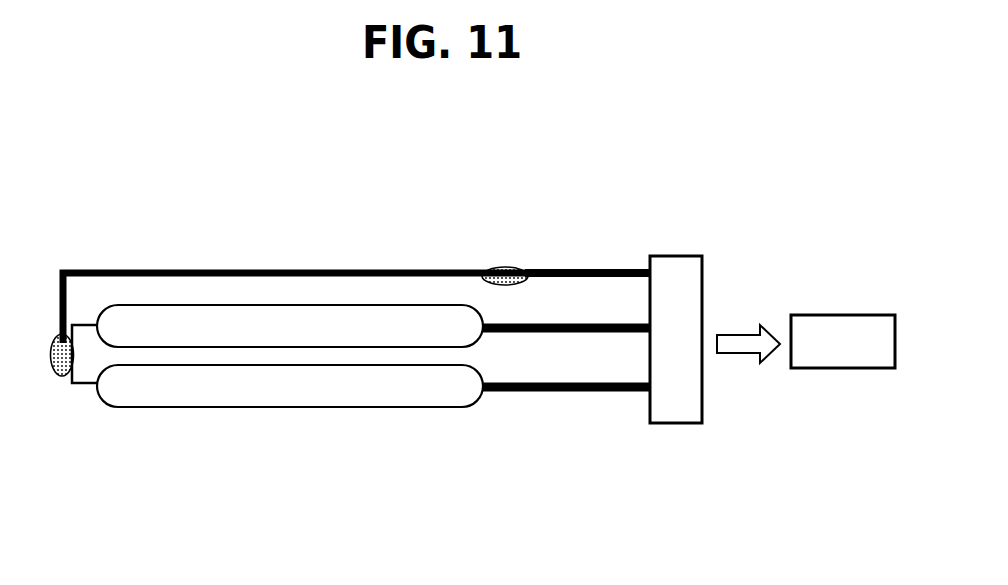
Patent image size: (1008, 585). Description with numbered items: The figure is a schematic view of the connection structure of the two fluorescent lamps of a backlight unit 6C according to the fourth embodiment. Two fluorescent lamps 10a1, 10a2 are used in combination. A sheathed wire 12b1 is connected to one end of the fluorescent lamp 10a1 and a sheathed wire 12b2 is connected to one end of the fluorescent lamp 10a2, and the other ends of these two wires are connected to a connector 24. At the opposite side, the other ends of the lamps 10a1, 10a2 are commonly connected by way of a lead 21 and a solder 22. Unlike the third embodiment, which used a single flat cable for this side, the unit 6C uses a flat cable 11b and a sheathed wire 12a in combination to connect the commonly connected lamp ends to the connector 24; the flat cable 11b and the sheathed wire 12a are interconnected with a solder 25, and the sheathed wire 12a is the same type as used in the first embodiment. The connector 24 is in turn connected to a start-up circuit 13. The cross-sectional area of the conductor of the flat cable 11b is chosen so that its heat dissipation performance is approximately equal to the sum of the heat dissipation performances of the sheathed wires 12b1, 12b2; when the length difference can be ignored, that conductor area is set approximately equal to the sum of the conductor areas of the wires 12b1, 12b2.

The backlight unit 6C is at (432, 160).
The flat cable 11b is at (407, 240).
The sheathed wire 12a is at (623, 230).
The sheathed wire 12b1 is at (583, 392).
The sheathed wire 12b2 is at (607, 322).
The solder 25 is at (508, 268).
The fluorescent lamp 10a1 is at (338, 390).
The fluorescent lamp 10a2 is at (230, 320).
The lead 21 is at (82, 386).
The solder 22 is at (52, 362).
The connector 24 is at (692, 400).
The start-up circuit 13 is at (815, 320).